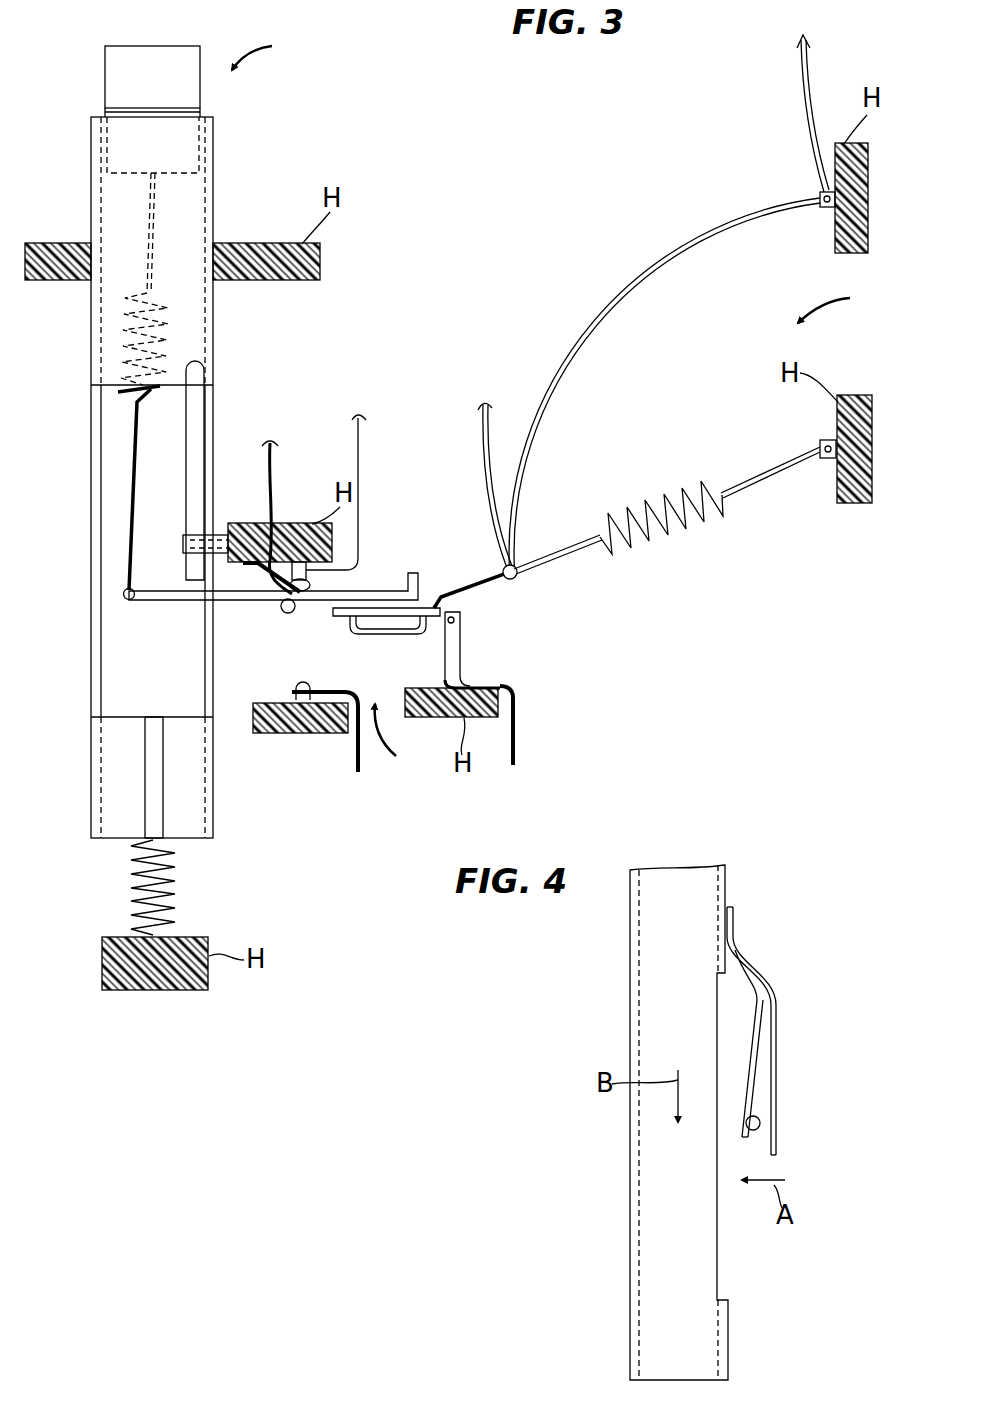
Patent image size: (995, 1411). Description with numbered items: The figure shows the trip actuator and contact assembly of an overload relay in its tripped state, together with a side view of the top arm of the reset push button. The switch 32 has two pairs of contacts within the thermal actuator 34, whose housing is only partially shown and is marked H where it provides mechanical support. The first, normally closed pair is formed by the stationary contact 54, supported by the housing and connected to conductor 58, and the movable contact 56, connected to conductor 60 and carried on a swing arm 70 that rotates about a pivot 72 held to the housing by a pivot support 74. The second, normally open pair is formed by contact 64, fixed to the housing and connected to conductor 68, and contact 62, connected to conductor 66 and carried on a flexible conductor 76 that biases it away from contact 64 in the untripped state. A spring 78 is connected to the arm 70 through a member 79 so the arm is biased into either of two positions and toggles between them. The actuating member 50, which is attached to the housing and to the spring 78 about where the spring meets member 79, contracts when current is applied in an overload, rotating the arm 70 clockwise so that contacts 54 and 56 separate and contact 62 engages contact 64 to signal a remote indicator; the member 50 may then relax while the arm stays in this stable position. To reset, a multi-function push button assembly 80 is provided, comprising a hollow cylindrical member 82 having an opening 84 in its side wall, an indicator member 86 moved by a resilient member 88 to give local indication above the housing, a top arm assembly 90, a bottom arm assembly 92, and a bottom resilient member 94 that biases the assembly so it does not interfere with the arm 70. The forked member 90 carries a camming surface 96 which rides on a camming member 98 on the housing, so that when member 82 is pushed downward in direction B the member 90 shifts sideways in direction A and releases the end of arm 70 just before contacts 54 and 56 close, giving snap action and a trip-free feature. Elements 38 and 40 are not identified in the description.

In FIG. 3, the switch 32 is at (403, 740).
In FIG. 3, the thermal actuator 34 is at (844, 302).
In FIG. 3, the cable 38 is at (482, 412).
In FIG. 3, the cable 40 is at (806, 82).
In FIG. 3, the actuating member 50 is at (681, 247).
In FIG. 3, the contact 54 is at (296, 690).
In FIG. 3, the contact 56 is at (284, 614).
In FIG. 3, the conductor 58 is at (358, 773).
In FIG. 3, the conductor 60 is at (515, 742).
In FIG. 3, the contact 62 is at (312, 586).
In FIG. 3, the contact 64 is at (330, 568).
In FIG. 3, the conductor 66 is at (278, 470).
In FIG. 3, the conductor 68 is at (358, 472).
In FIG. 3, the swing arm 70 is at (381, 636).
In FIG. 3, the pivot 72 is at (458, 620).
In FIG. 3, the pivot support 74 is at (470, 680).
In FIG. 3, the flexible conductor 76 is at (250, 600).
In FIG. 3, the spring 78 is at (690, 483).
In FIG. 3, the member 79 is at (404, 634).
In FIG. 3, the multi-function push button assembly 80 is at (270, 51).
In FIG. 3, the hollow cylindrical member 82 is at (214, 162).
In FIG. 4, the hollow cylindrical member 82 is at (630, 1176).
In FIG. 3, the opening 84 is at (102, 490).
In FIG. 3, the indicator member 86 is at (105, 74).
In FIG. 3, the resilient member 88 is at (118, 393).
In FIG. 3, the top arm assembly 90 is at (205, 398).
In FIG. 4, the top arm assembly 90 is at (778, 1039).
In FIG. 3, the bottom arm assembly 92 is at (145, 778).
In FIG. 3, the bottom resilient member 94 is at (175, 889).
In FIG. 4, the camming surface 96 is at (748, 1033).
In FIG. 3, the camming member 98 is at (183, 545).
In FIG. 4, the camming member 98 is at (760, 1124).